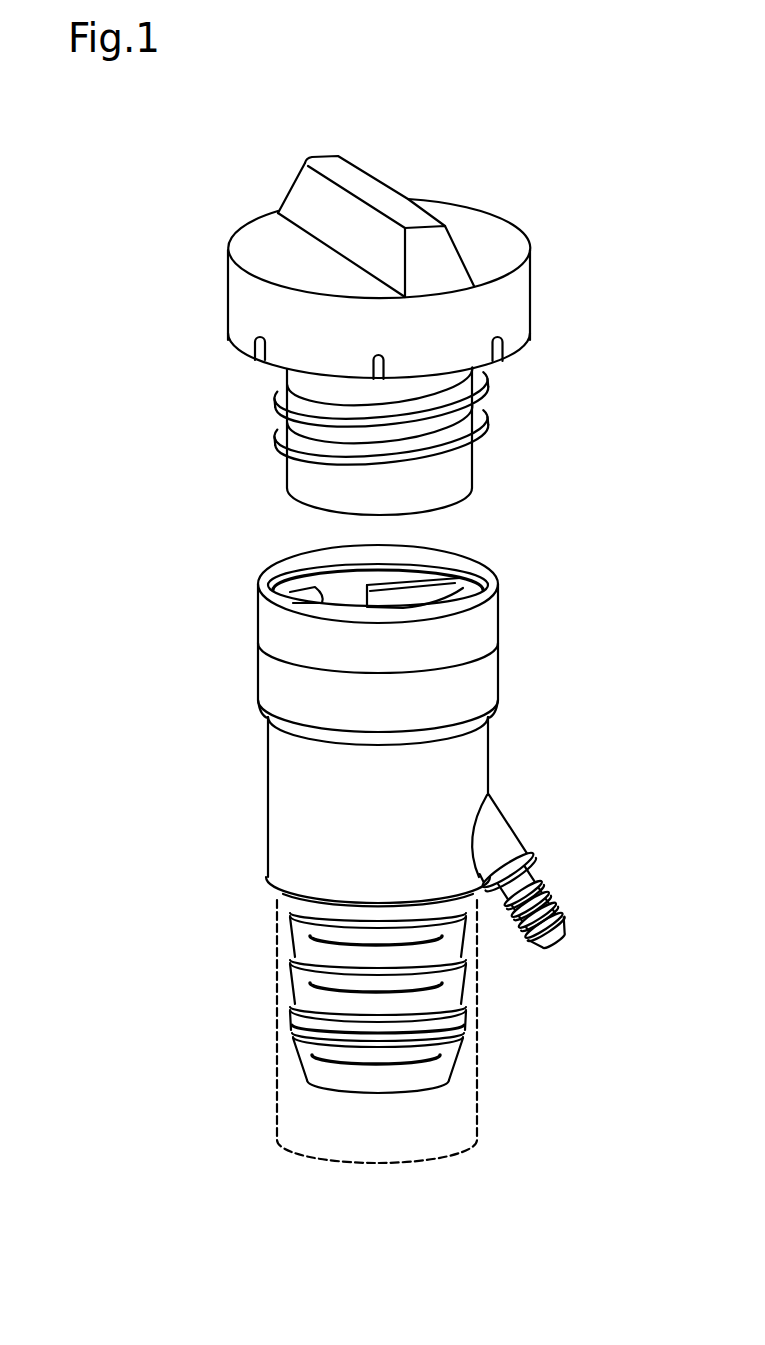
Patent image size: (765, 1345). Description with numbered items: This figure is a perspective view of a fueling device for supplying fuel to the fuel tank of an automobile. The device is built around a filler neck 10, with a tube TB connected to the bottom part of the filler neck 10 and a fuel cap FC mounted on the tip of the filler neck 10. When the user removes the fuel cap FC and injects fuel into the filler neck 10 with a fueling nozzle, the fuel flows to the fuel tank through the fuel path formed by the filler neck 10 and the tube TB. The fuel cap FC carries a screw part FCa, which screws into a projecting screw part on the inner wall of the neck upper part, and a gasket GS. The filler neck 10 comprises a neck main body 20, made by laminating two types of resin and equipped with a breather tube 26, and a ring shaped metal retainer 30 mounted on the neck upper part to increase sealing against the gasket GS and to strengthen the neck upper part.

The fuel cap FC is at (532, 303).
The screw part FCa is at (486, 383).
The gasket GS is at (337, 377).
The filler neck 10 is at (388, 781).
The retainer 30 is at (498, 580).
The neck main body 20 is at (498, 673).
The breather tube 26 is at (507, 825).
The tube TB is at (478, 1052).